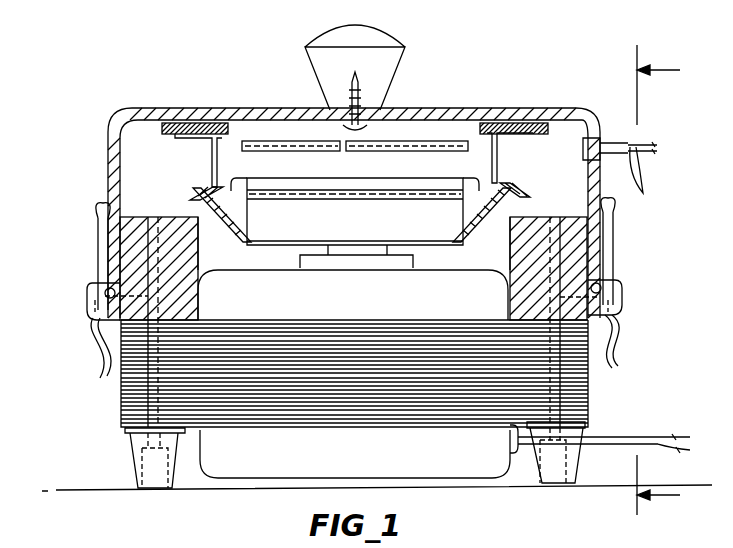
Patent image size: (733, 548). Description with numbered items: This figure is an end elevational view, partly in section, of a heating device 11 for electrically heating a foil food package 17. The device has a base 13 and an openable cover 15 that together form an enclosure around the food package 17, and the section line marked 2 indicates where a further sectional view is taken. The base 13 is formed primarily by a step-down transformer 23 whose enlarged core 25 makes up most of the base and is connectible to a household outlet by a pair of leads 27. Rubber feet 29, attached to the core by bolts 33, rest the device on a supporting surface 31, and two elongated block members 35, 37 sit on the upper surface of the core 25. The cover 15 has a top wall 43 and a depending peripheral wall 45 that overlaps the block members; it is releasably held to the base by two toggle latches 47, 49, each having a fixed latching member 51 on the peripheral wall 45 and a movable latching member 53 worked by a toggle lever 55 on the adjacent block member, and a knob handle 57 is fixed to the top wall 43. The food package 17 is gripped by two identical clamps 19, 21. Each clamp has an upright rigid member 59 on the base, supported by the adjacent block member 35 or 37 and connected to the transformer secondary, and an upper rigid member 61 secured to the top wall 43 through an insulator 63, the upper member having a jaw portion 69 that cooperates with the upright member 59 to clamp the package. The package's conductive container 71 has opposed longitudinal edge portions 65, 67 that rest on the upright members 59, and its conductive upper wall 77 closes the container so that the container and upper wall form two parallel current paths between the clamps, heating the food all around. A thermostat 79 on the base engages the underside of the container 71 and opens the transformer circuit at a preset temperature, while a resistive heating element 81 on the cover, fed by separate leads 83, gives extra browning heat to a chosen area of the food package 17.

The section line 2- 2 is at (668, 280).
The heating device 11 is at (208, 78).
The base 13 is at (120, 389).
The cover 15 is at (242, 108).
The food package 17 is at (412, 167).
The clamp 19 is at (192, 188).
The clamp 21 is at (532, 187).
The transformer 23 is at (300, 456).
The core 25 is at (563, 410).
The leads 27 is at (623, 438).
The feet 29 is at (138, 440).
The supporting surface 31 is at (80, 490).
The bolts 33 is at (147, 472).
The block member 35 is at (167, 216).
The block member 37 is at (525, 227).
The top wall 43 is at (483, 118).
The peripheral wall 45 is at (108, 152).
The toggle latch 47 is at (80, 283).
The toggle latch 49 is at (630, 276).
The fixed latching member 51 is at (90, 212).
The movable latching member 53 is at (616, 220).
The latch lever 55 is at (100, 356).
The handle 57 is at (380, 38).
The upright rigid member 59 is at (207, 238).
The upper rigid member 61 is at (220, 150).
The insulator 63 is at (194, 124).
The longitudinal edge portion 65 is at (212, 238).
The longitudinal edge portion 67 is at (458, 254).
The jaw portion 69 is at (208, 185).
The container 71 is at (462, 245).
The upper wall 77 is at (237, 184).
The thermostat 79 is at (363, 249).
The resistive heating element 81 is at (390, 140).
The leads 83 is at (640, 177).